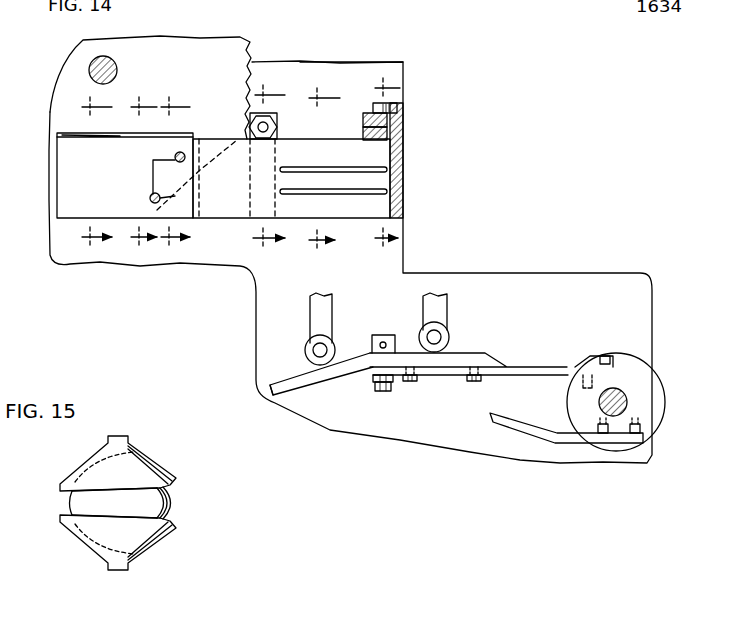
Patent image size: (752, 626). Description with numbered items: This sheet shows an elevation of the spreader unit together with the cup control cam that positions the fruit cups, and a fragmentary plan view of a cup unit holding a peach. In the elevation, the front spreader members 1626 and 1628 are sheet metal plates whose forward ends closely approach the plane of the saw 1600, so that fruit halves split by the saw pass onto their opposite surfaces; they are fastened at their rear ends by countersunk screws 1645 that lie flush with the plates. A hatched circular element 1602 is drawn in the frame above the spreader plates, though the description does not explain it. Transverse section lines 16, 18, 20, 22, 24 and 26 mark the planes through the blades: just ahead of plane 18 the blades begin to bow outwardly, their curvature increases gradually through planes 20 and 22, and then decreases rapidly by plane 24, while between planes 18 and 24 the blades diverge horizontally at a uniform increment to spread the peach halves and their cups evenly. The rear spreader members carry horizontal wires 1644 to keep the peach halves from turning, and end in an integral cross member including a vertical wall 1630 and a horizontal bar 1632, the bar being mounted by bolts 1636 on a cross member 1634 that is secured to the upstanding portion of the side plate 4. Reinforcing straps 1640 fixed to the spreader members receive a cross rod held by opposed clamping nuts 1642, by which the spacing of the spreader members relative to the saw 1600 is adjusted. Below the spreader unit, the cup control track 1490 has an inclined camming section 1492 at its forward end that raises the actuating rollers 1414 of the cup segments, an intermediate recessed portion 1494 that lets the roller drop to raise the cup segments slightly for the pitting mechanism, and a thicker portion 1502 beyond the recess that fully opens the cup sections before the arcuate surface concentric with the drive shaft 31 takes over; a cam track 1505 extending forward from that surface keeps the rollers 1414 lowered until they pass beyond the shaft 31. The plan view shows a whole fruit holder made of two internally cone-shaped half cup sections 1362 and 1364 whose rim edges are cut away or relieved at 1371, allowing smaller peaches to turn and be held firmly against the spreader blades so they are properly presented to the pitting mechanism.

In FIG. 14, the side plate 4 is at (325, 85).
In FIG. 14, the section line 16 is at (83, 173).
In FIG. 14, the section line 18 is at (137, 177).
In FIG. 14, the section line 20 is at (185, 175).
In FIG. 14, the section line 22 is at (267, 172).
In FIG. 14, the section line 24 is at (320, 172).
In FIG. 14, the section line 26 is at (380, 172).
In FIG. 14, the drive shaft 31 is at (599, 403).
In FIG. 14, the actuating roller 1414 is at (420, 338).
In FIG. 14, the track 1490 is at (443, 358).
In FIG. 14, the inclined camming section 1492 is at (282, 393).
In FIG. 14, the recessed portion 1494 is at (555, 352).
In FIG. 14, the track portion 1502 is at (596, 356).
In FIG. 14, the cam track 1505 is at (487, 418).
In FIG. 14, the saw 1600 is at (250, 50).
In FIG. 14, the shaft 1602 is at (117, 72).
In FIG. 14, the front spreader member 1626 is at (110, 191).
In FIG. 14, the front spreader member 1628 is at (125, 126).
In FIG. 14, the vertical wall 1630 is at (403, 183).
In FIG. 14, the horizontal bar 1632 is at (403, 133).
In FIG. 14, the cross member 1634 is at (387, 120).
In FIG. 14, the bolts 1636 is at (397, 105).
In FIG. 14, the reinforcing strap 1640 is at (277, 130).
In FIG. 14, the clamping nuts 1642 is at (250, 127).
In FIG. 14, the horizontal wires 1644 is at (342, 193).
In FIG. 14, the screws 1645 is at (156, 173).
In FIG. 15, the cup section 1362 is at (129, 565).
In FIG. 15, the cup section 1364 is at (135, 455).
In FIG. 15, the relieved rim edge 1371 is at (167, 518).